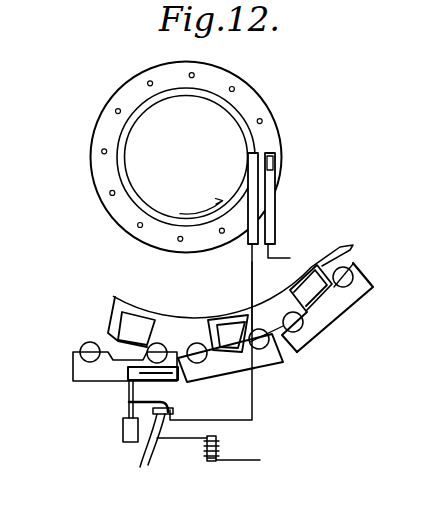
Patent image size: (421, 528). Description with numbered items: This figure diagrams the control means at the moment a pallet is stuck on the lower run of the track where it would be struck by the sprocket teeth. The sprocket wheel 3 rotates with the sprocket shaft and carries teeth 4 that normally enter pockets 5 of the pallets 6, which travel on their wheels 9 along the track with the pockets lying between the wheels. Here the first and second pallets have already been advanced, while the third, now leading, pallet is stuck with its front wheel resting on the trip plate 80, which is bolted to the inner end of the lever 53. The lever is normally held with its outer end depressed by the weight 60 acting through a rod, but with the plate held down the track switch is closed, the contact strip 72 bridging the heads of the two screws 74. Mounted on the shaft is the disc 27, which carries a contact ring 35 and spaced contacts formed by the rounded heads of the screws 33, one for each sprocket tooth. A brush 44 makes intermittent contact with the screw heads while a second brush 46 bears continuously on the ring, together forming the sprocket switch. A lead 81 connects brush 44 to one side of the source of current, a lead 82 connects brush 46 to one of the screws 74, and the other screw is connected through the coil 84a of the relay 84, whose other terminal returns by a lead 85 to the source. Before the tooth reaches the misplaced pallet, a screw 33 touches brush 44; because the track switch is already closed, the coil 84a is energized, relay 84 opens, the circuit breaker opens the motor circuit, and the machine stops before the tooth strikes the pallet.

The disc 27 is at (258, 104).
The screws 33 is at (272, 118).
The contact ring 35 is at (256, 140).
The second brush 46 is at (248, 176).
The brush 44 is at (276, 205).
The lead 81 is at (276, 254).
The lead 82 is at (252, 262).
The sprocket wheel 3 is at (320, 250).
The teeth 4 is at (130, 317).
The wheels 9 is at (180, 343).
The pallets 6 is at (368, 292).
The pockets 5 is at (86, 375).
The trip plate 80 is at (207, 382).
The lever 53 is at (127, 388).
The weight 60 is at (125, 437).
The contact strip 72 is at (170, 411).
The screws 74 is at (143, 454).
The relay 84 is at (217, 441).
The coil 84a is at (208, 458).
The lead 85 is at (242, 460).